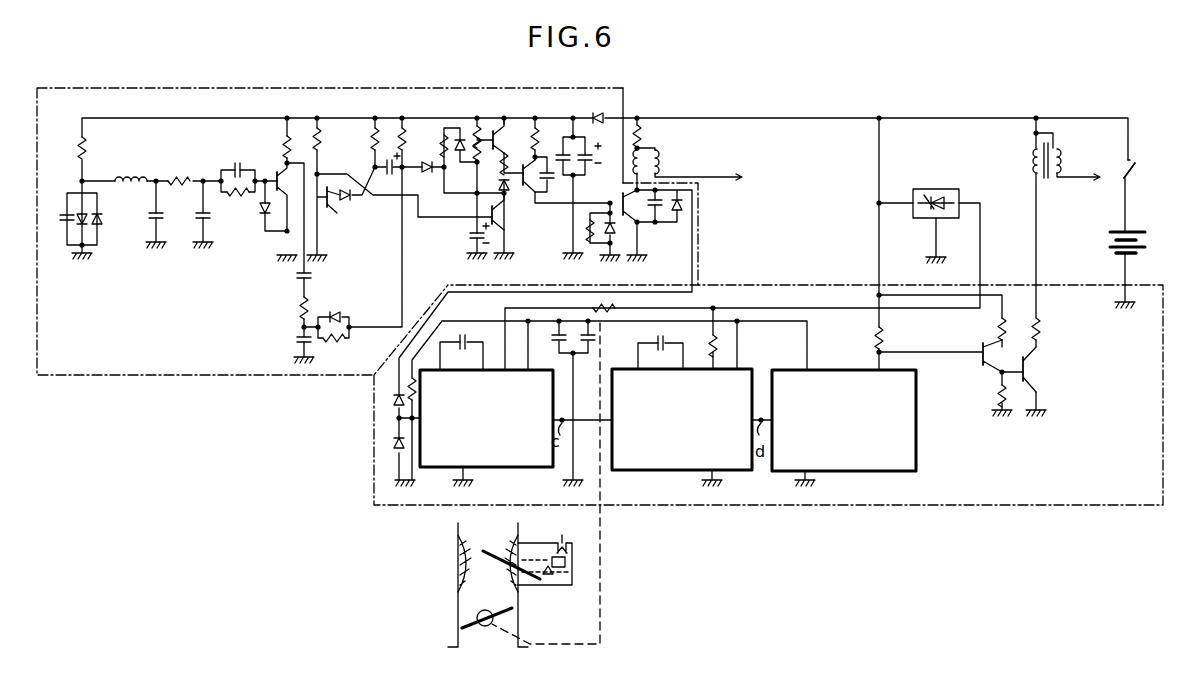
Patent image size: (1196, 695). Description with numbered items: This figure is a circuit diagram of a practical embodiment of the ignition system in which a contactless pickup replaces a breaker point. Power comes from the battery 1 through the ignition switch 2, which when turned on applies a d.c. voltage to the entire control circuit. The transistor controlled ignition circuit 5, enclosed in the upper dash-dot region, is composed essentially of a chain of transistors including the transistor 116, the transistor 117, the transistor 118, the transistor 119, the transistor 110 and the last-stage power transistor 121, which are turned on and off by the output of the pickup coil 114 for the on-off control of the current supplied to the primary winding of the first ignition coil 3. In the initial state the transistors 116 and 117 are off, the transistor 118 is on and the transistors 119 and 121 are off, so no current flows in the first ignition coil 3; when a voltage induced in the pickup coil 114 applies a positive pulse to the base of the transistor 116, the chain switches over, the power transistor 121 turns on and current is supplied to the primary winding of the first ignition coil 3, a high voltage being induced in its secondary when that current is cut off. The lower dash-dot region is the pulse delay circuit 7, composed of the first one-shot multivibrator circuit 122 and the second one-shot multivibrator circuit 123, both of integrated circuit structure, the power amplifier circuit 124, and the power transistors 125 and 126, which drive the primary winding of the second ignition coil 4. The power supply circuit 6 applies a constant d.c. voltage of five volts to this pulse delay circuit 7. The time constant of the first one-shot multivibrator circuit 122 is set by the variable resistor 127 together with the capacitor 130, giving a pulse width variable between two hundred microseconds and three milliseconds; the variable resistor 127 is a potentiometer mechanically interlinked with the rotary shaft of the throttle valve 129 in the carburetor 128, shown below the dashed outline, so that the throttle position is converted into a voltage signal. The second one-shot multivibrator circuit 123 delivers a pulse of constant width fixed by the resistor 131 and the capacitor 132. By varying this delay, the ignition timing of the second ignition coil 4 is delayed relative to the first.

The battery 1 is at (1118, 250).
The ignition switch 2 is at (1124, 176).
The first ignition coil 3 is at (658, 161).
The second ignition coil 4 is at (1061, 151).
The transistor controlled ignition circuit 5 is at (290, 88).
The power supply circuit 6 is at (930, 190).
The pulse delay circuit 7 is at (883, 505).
The transistor 110 is at (502, 212).
The pickup coil 114 is at (135, 177).
The transistor 116 is at (277, 172).
The transistor 117 is at (331, 206).
The transistor 118 is at (497, 134).
The transistor 119 is at (530, 192).
The power transistor 121 is at (627, 196).
The first one-shot multivibrator circuit 122 is at (532, 468).
The second one-shot multivibrator circuit 123 is at (670, 471).
The power amplifier circuit 124 is at (916, 440).
The power transistor 125 is at (993, 348).
The power transistor 126 is at (1030, 375).
The variable resistor 127 is at (612, 304).
The carburetor 128 is at (518, 592).
The throttle valve 129 is at (484, 627).
The capacitor 130 is at (466, 331).
The resistor 131 is at (722, 348).
The capacitor 132 is at (658, 327).